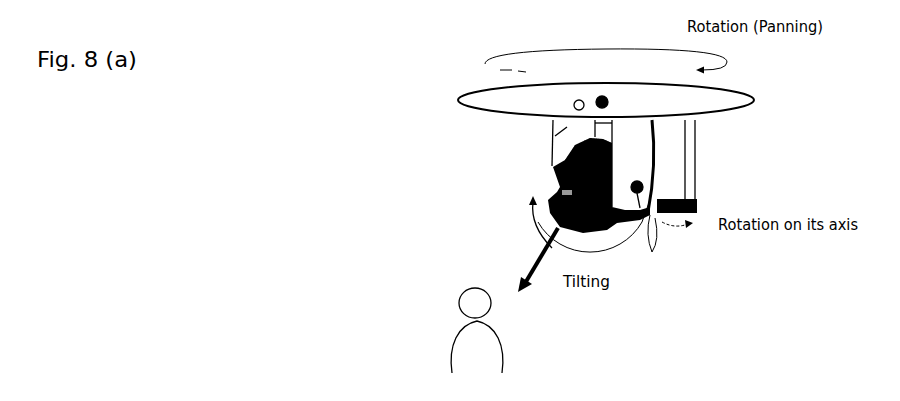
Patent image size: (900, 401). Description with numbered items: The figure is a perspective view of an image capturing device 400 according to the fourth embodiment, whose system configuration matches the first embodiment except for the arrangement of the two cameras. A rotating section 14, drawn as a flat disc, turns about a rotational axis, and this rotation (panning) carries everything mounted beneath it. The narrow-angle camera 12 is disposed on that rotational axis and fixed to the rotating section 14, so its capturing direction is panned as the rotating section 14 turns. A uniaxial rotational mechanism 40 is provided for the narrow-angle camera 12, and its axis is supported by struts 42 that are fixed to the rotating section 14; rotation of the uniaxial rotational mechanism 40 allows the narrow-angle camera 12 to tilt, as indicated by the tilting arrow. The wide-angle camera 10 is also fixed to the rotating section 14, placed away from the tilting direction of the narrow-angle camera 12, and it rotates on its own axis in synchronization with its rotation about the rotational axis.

The rotating section 14 is at (740, 104).
The struts 42 is at (551, 139).
The narrow-angle camera 12 is at (550, 182).
The wide-angle camera 10 is at (690, 200).
The uniaxial rotational mechanism 40 is at (655, 230).
The image capturing device 400 is at (634, 351).